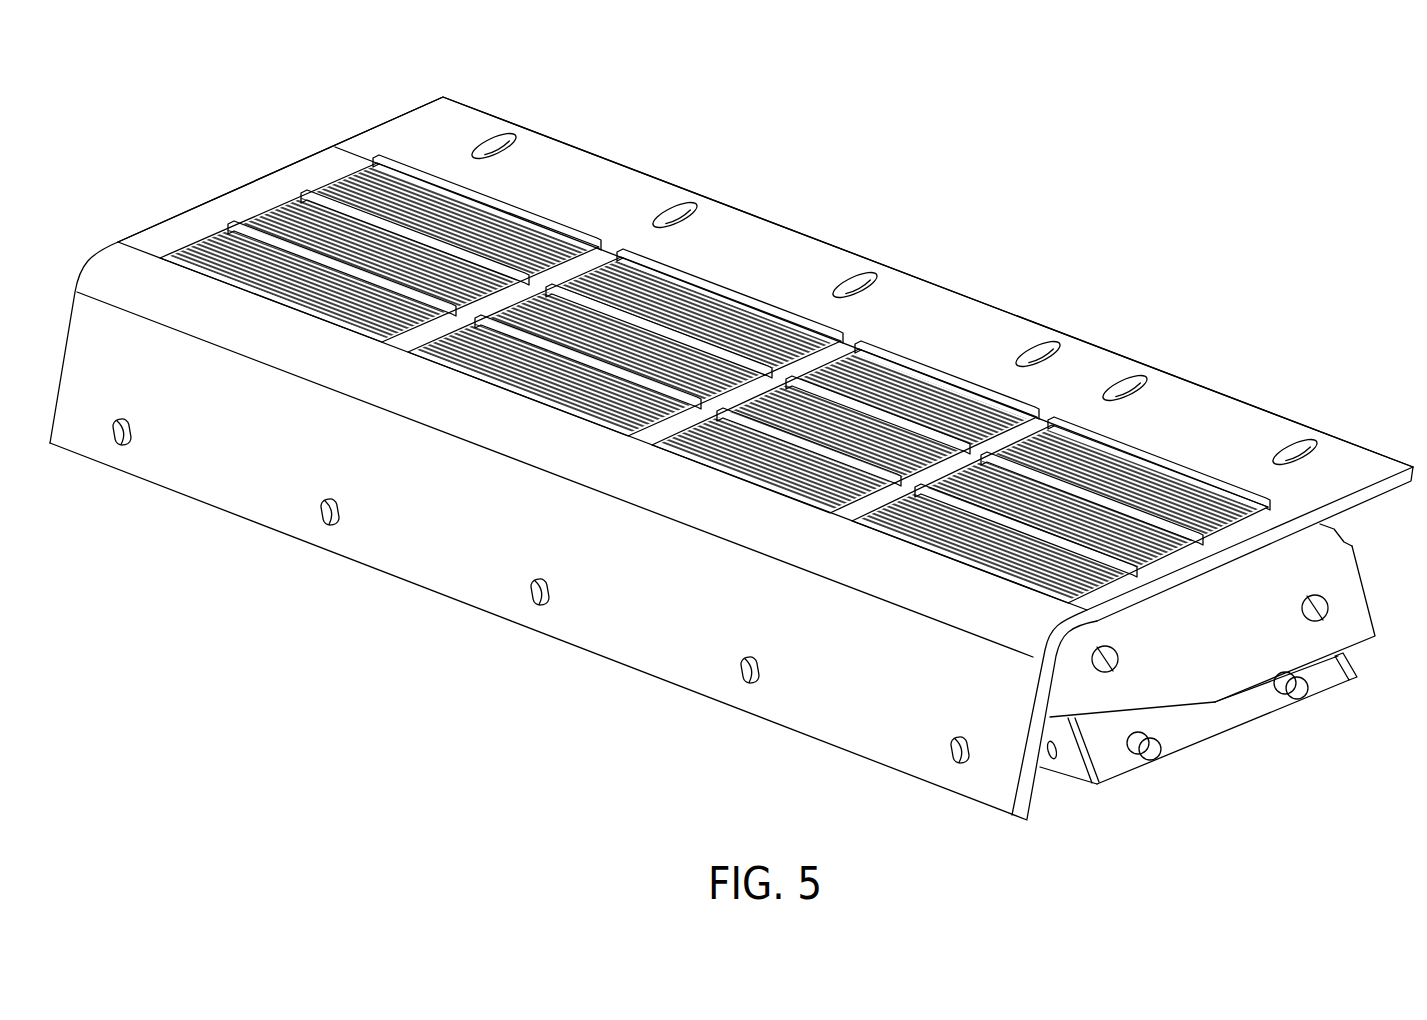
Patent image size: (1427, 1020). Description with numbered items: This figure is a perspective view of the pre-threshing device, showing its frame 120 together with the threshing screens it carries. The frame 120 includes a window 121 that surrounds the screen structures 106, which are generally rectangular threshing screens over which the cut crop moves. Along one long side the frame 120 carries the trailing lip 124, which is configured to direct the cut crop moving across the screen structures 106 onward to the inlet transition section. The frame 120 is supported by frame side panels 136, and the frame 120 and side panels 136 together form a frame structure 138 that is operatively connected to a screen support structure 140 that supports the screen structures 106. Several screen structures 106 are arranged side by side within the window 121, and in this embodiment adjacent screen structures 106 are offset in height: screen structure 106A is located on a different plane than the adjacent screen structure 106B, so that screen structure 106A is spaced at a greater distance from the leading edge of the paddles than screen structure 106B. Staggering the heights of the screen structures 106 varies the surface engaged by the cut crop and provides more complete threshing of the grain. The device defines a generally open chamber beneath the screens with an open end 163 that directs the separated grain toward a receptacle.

The frame 120 is at (736, 426).
The window 121 is at (547, 214).
The screen structure 106 is at (392, 187).
The screen structure 106A is at (697, 315).
The screen structure 106B is at (907, 392).
The trailing lip 124 is at (1085, 378).
The frame side panel 136 is at (1236, 620).
The frame structure 138 is at (1350, 639).
The screen support structure 140 is at (1198, 736).
The open end 163 is at (1250, 746).